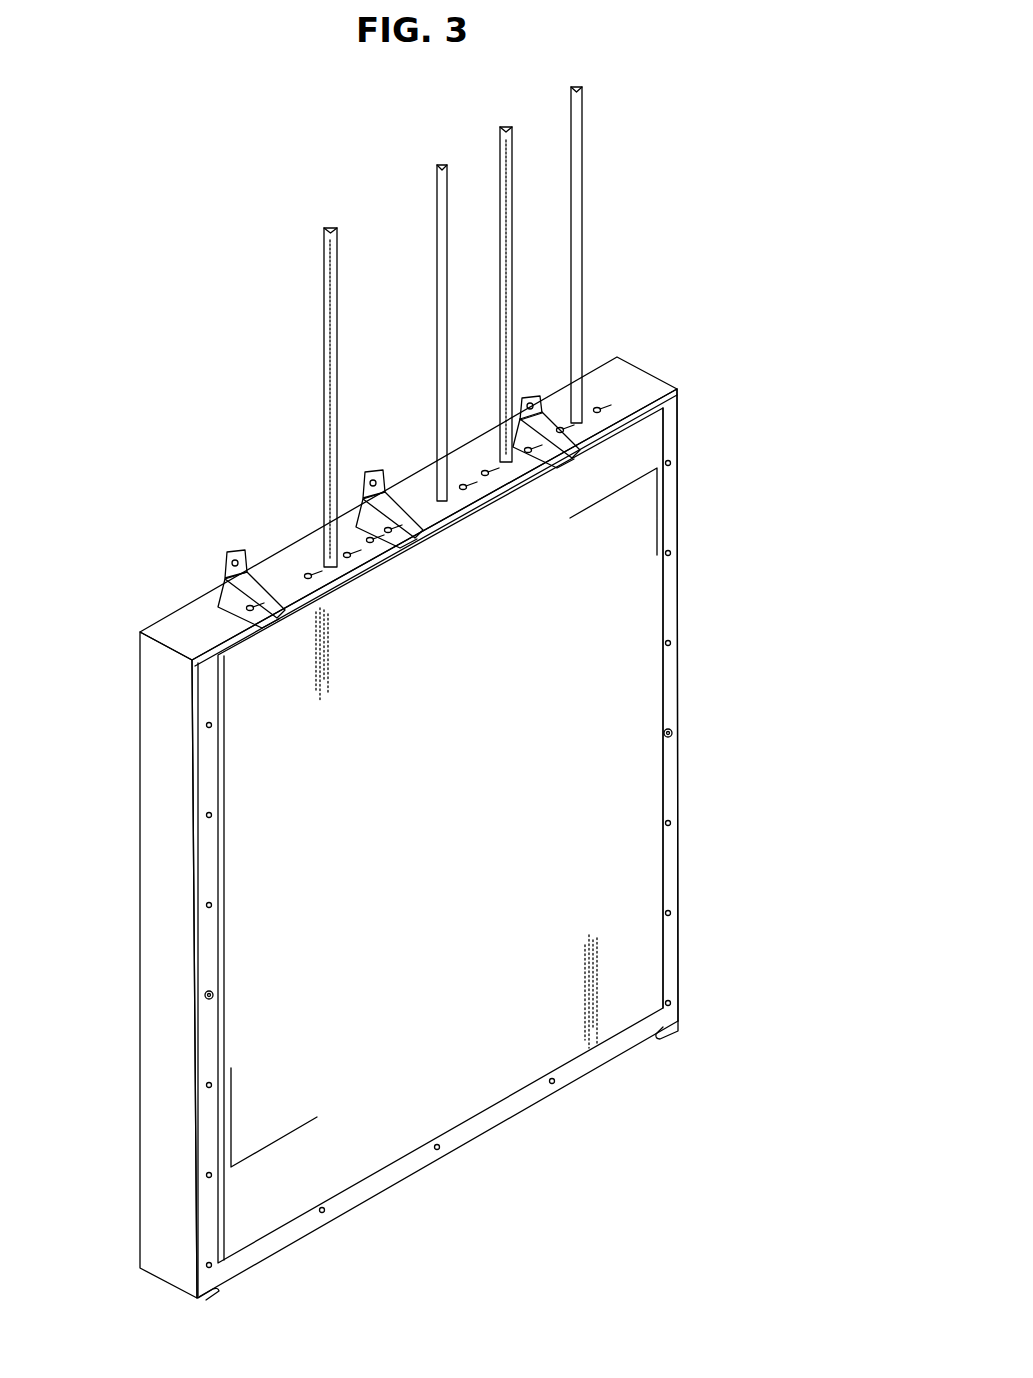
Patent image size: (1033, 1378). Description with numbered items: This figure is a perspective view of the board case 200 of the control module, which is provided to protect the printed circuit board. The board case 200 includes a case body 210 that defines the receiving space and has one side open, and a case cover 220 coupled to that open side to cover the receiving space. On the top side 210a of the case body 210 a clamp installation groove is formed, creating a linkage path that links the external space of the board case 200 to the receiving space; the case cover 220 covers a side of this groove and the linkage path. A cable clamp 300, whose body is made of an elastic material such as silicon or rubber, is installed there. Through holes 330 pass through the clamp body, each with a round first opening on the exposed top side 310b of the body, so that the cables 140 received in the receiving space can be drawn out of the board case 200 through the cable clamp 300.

The cable 140 is at (323, 336).
The board case 200 is at (146, 612).
The case body 210 is at (636, 377).
The top side of the case body 210a is at (182, 634).
The case cover 220 is at (678, 433).
The cable clamp 300 is at (303, 557).
The top side of the body 310b is at (230, 607).
The through hole 330 is at (463, 484).